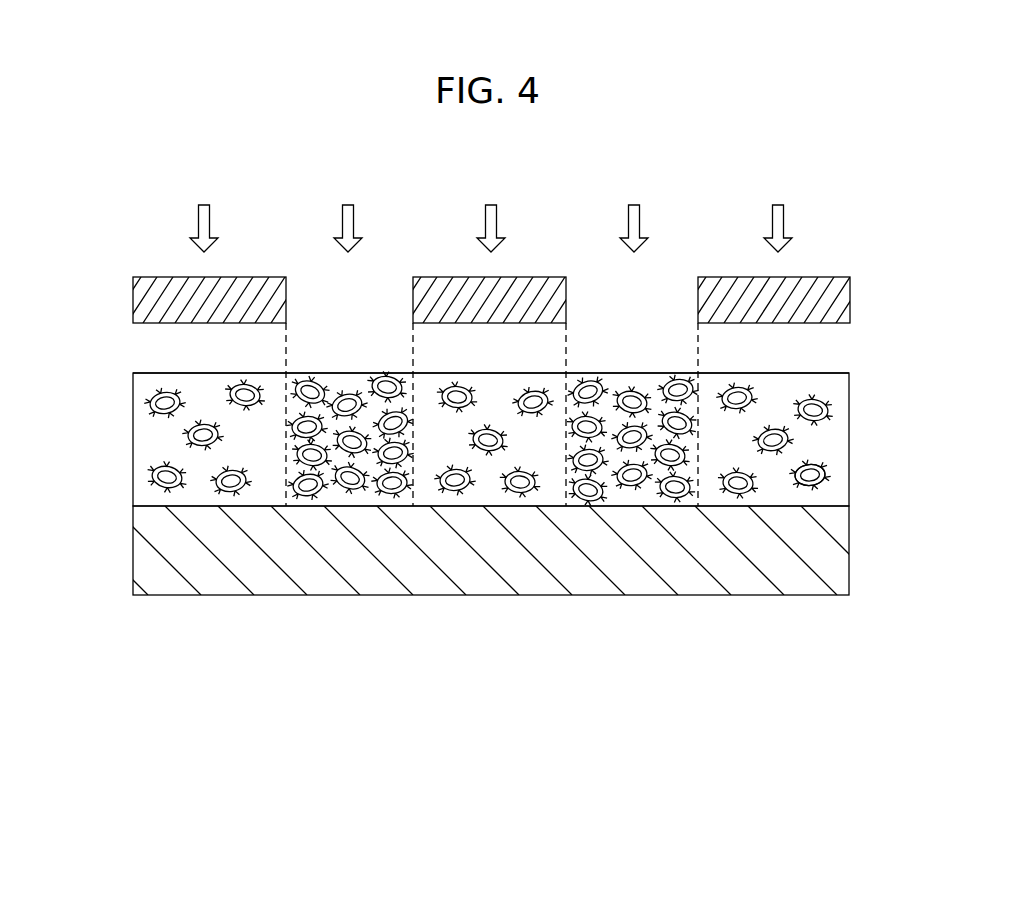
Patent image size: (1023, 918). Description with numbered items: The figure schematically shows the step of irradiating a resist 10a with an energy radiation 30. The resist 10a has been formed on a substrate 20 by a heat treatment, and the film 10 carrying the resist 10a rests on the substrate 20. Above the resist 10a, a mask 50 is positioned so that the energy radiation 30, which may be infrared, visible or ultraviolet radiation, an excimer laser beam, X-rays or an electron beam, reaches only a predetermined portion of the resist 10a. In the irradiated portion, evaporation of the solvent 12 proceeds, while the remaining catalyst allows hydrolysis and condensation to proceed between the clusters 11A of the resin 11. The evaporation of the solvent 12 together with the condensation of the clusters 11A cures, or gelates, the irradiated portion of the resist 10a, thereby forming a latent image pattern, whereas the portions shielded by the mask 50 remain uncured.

The energy radiation 30 is at (198, 222).
The mask 50 is at (133, 297).
The anisotropic conductive film 10 is at (553, 414).
The resist 10a is at (850, 383).
The solvent 12 is at (148, 450).
The resin 11 is at (818, 462).
The clusters 11A is at (835, 478).
The substrate 20 is at (838, 575).